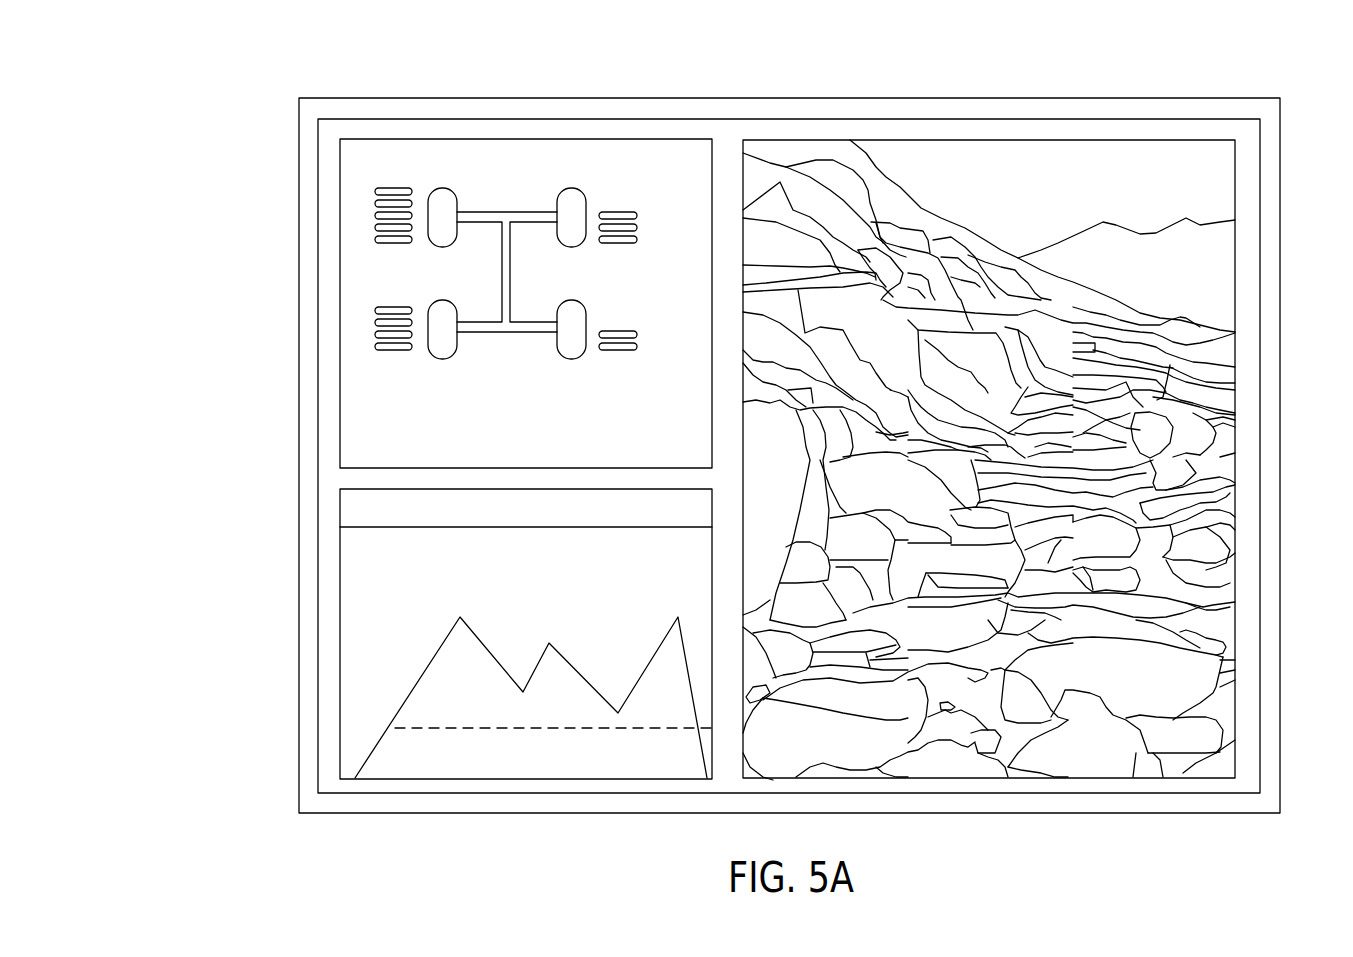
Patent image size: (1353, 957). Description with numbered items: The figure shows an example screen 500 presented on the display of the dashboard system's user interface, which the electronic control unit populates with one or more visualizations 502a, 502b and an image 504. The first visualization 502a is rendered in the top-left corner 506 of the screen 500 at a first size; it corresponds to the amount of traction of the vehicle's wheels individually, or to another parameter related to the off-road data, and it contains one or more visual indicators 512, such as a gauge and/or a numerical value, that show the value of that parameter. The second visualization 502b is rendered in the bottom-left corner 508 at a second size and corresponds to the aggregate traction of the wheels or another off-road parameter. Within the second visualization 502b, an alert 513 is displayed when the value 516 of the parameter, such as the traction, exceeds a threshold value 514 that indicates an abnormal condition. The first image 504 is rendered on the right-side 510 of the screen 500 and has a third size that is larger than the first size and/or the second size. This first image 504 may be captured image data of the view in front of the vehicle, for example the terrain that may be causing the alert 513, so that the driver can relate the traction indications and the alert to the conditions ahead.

The screen 500 is at (145, 101).
The first visualization 502a is at (347, 158).
The second visualization 502b is at (348, 497).
The first image 504 is at (1232, 738).
The top-left corner 506 is at (328, 128).
The bottom-left corner 508 is at (712, 512).
The right-side 510 is at (1255, 518).
The visual indicators 512 is at (389, 190).
The alert 513 is at (457, 523).
The threshold value 514 is at (444, 718).
The value 516 is at (563, 655).